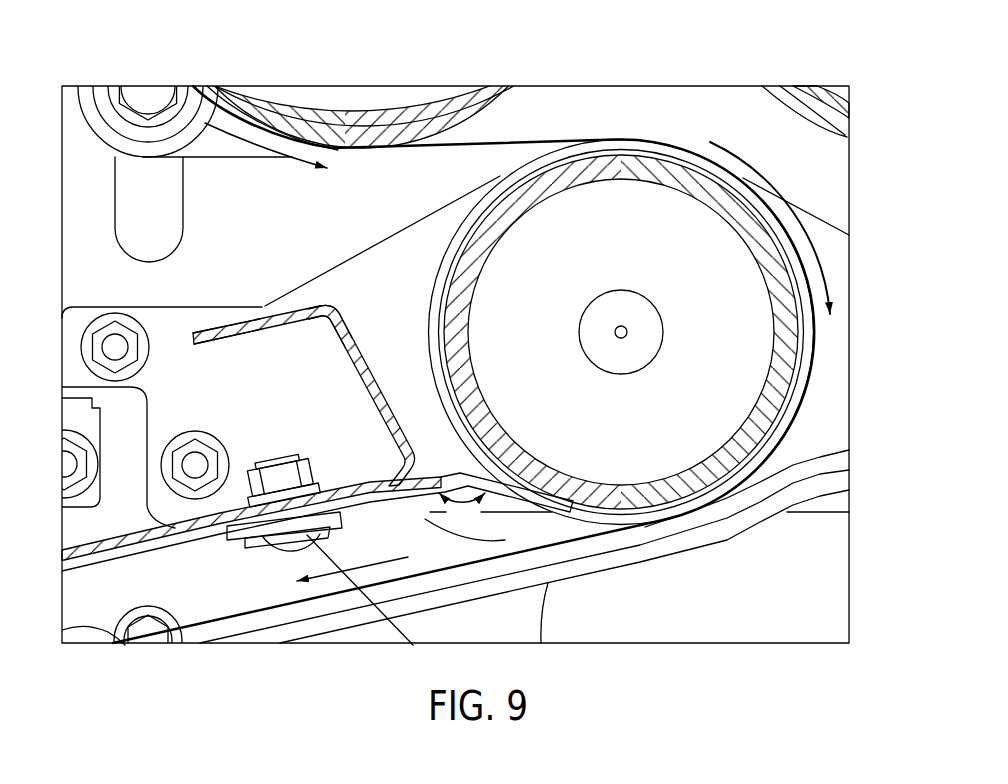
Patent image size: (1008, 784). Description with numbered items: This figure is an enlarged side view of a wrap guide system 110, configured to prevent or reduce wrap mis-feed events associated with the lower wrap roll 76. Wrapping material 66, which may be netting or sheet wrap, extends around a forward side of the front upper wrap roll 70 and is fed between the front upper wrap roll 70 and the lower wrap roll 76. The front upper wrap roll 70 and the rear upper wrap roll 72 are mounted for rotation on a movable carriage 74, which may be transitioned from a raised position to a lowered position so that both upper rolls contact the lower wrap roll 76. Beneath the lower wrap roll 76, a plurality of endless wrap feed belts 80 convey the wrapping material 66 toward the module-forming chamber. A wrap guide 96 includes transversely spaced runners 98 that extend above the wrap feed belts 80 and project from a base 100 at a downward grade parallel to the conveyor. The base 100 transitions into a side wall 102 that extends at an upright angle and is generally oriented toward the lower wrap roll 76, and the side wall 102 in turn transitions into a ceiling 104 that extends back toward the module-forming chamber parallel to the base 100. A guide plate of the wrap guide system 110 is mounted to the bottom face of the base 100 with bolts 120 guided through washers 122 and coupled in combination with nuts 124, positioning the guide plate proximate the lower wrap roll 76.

The wrap guide system 110 is at (727, 70).
The wrapping material 66 is at (525, 141).
The front upper wrap roll 70 is at (278, 100).
The rear upper wrap roll 72 is at (837, 126).
The movable carriage 74 is at (102, 144).
The lower wrap roll 76 is at (785, 350).
The wrap feed belts 80 is at (642, 533).
The wrap guide 96 is at (378, 378).
The runners 98 is at (97, 556).
The base 100 is at (377, 481).
The side wall 102 is at (350, 333).
The ceiling 104 is at (223, 327).
The bolts 120 is at (283, 550).
The washers 122 is at (231, 541).
The nuts 124 is at (310, 460).